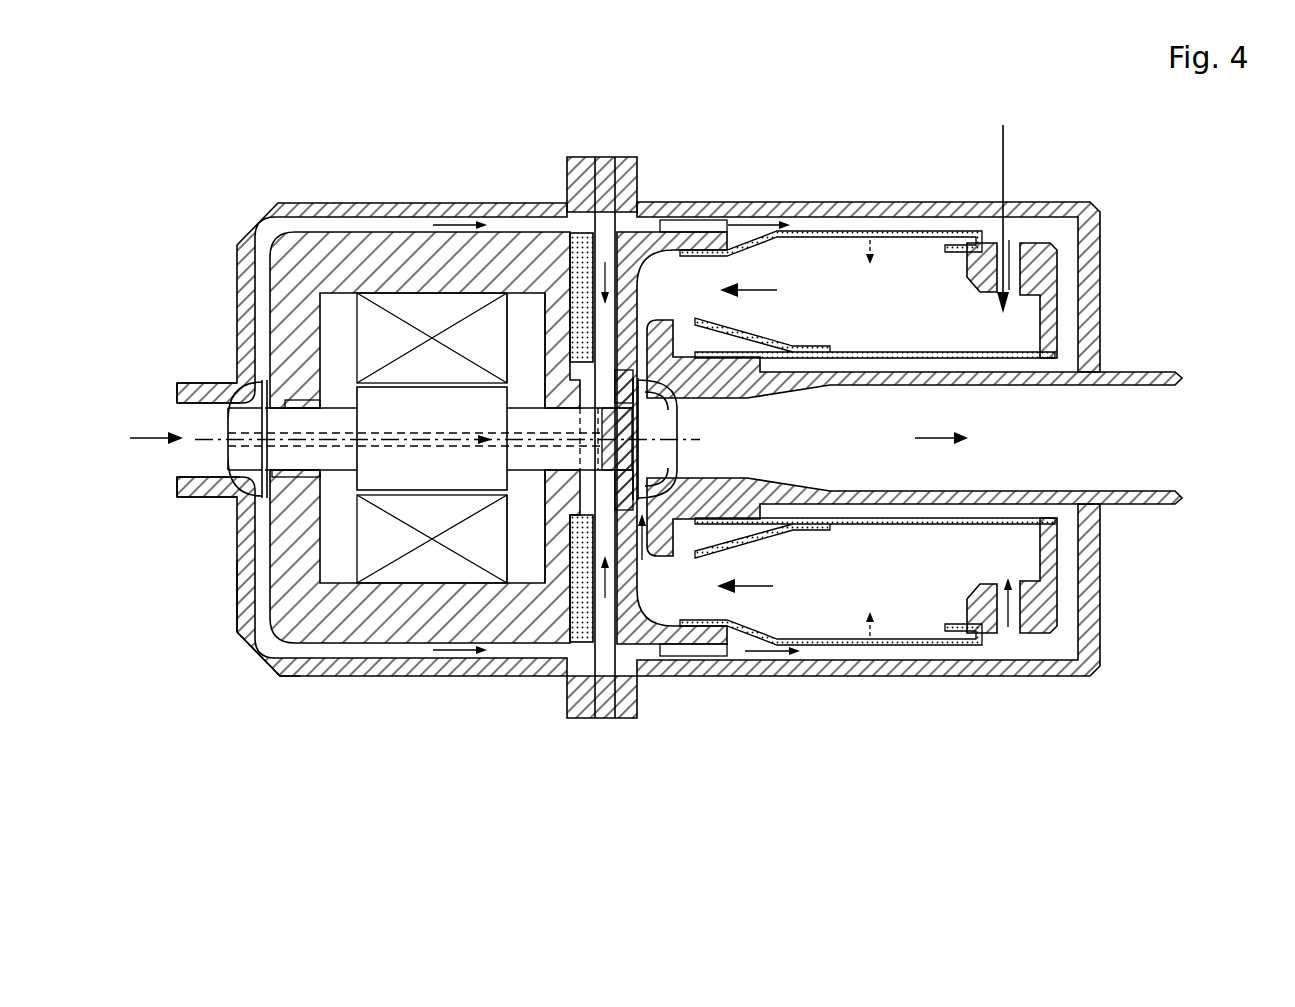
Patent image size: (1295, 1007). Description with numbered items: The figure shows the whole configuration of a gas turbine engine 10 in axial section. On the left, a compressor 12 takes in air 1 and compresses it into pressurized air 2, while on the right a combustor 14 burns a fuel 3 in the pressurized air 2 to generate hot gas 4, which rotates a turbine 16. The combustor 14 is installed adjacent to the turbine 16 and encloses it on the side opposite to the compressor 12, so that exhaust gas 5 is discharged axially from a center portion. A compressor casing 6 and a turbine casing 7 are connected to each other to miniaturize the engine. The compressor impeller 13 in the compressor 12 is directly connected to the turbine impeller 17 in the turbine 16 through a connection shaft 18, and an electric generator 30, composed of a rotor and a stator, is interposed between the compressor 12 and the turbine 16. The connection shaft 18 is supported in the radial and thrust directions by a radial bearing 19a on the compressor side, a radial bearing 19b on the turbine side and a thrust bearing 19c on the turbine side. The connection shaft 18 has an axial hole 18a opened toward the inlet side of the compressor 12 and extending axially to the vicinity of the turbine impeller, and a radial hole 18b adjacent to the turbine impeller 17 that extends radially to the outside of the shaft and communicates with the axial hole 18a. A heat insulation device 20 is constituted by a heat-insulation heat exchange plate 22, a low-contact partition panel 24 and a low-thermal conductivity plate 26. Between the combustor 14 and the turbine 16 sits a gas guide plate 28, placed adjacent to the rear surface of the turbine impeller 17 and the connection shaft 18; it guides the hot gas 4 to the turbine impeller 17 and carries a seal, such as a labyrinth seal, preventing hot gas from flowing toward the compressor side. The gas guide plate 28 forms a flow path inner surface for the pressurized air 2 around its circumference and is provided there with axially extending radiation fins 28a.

The air 1 is at (153, 445).
The pressurized air 2 is at (440, 210).
The fuel 3 is at (1000, 152).
The hot gas 4 is at (641, 345).
The exhaust gas 5 is at (970, 441).
The compressor casing 6 is at (263, 664).
The turbine casing 7 is at (815, 668).
The gas turbine engine 10 is at (218, 191).
The compressor 12 is at (198, 369).
The compressor impeller 13 is at (245, 457).
The combustor 14 is at (802, 248).
The turbine 16 is at (728, 454).
The turbine impeller 17 is at (645, 453).
The connection shaft 18 is at (335, 390).
The axial hole 18a is at (391, 440).
The radial hole 18b is at (603, 423).
The radial bearing of the compressor side 19a is at (307, 475).
The radial bearing of the turbine side 19b is at (548, 473).
The thrust bearing of the turbine side 19c is at (585, 385).
The heat insulation device 20 is at (545, 192).
The heat-insulation heat exchange plate 22 is at (615, 197).
The low-contact partition panel 24 is at (580, 720).
The low-thermal conductivity plate 26 is at (583, 248).
The gas guide plate 28 is at (643, 253).
The radiation fins 28a is at (683, 225).
The electric generator 30 is at (391, 290).